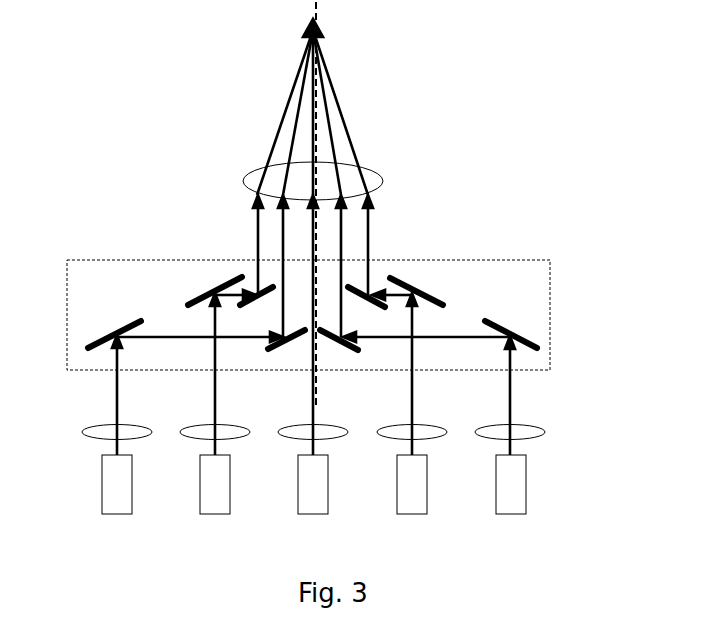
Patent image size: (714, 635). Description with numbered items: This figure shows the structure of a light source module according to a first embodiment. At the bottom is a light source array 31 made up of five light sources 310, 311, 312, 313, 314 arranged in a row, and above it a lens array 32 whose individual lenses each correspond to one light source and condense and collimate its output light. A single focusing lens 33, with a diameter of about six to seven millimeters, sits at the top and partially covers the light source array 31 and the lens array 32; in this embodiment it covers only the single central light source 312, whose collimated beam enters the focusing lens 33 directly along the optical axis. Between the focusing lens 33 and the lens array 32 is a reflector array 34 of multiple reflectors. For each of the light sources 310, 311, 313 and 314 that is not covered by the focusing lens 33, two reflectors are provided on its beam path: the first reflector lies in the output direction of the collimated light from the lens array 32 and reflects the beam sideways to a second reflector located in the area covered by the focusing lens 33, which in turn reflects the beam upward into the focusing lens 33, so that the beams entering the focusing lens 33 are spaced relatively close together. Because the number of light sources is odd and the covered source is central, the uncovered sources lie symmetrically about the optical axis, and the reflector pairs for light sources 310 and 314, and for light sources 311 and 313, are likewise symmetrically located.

The light source array 31 is at (326, 504).
The light source 310 is at (117, 514).
The light source 311 is at (215, 514).
The light source 312 is at (313, 514).
The light source 313 is at (412, 514).
The light source 314 is at (512, 514).
The lens array 32 is at (543, 432).
The focusing lens 33 is at (383, 180).
The reflector array 34 is at (550, 317).